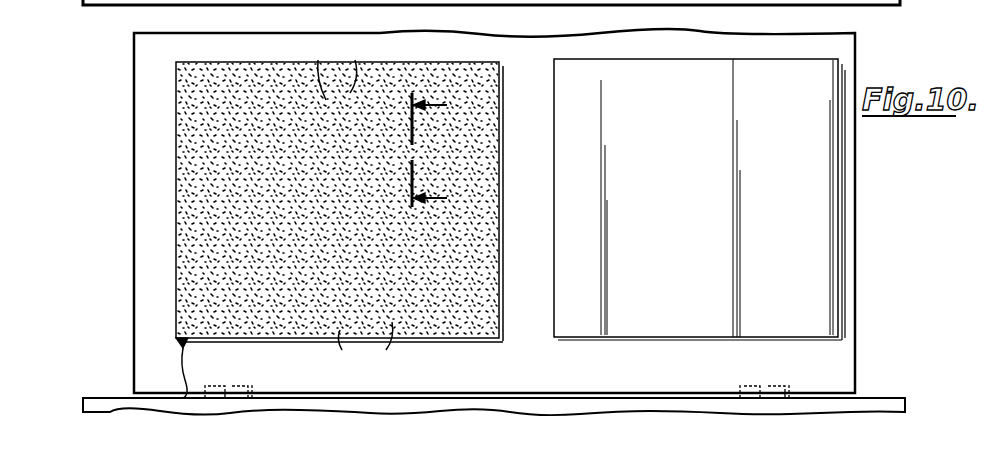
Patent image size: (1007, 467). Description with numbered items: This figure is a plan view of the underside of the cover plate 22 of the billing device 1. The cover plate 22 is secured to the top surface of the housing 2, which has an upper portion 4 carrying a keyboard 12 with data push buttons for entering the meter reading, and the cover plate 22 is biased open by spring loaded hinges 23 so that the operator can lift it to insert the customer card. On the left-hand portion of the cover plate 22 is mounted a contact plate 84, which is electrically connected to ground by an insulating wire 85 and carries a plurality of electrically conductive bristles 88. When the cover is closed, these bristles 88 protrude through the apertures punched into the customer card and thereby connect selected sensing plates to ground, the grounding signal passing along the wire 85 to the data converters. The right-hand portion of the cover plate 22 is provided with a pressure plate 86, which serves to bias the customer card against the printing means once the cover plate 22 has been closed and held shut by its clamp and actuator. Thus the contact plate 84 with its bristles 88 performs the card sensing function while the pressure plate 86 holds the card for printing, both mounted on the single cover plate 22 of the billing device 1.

The billing device 1 is at (492, 211).
The housing 2 is at (905, 2).
The upper portion 4 is at (83, 406).
The keyboard 12 is at (442, 152).
The cover plate 22 is at (134, 196).
The spring loaded hinges 23 is at (229, 392).
The contact plate 84 is at (206, 108).
The insulating wire 85 is at (183, 374).
The pressure plate 86 is at (582, 97).
The electrically conductive bristles 88 is at (355, 204).